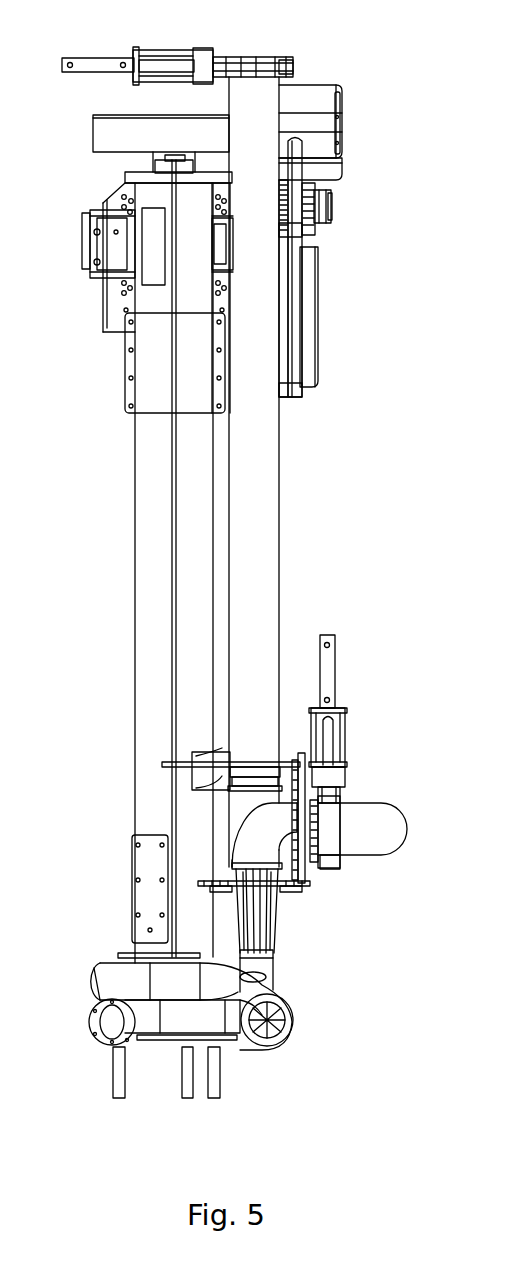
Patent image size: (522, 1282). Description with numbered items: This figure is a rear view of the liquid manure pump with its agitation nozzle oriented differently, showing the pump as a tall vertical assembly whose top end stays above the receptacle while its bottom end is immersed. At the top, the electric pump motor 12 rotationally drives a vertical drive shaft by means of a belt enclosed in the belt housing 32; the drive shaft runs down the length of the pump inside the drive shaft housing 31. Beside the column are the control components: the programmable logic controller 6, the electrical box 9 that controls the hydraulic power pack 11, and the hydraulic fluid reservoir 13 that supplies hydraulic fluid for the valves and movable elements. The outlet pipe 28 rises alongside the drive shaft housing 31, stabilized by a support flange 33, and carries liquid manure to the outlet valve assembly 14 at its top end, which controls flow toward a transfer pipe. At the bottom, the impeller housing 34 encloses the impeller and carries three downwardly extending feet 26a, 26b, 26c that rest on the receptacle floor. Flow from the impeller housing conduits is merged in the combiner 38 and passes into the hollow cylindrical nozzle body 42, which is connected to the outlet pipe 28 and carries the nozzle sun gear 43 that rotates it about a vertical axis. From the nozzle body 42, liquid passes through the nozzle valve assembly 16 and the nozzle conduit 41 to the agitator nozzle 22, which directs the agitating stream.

The outlet valve assembly 14 is at (204, 50).
The programmable logic controller 6 is at (317, 90).
The belt housing 32 is at (120, 118).
The electric pump motor 12 is at (117, 193).
The hydraulic power pack 11 is at (305, 175).
The electrical box 9 is at (336, 201).
The hydraulic fluid reservoir 13 is at (308, 340).
The outlet pipe 28 is at (268, 497).
The drive shaft housing 31 is at (148, 520).
The support flange 33 is at (202, 756).
The nozzle valve assembly 16 is at (337, 778).
The nozzle body 42 is at (245, 806).
The nozzle conduit 41 is at (393, 836).
The combiner 38 is at (228, 921).
The nozzle sun gear 43 is at (302, 886).
The agitator nozzle 22 is at (263, 968).
The impeller housing 34 is at (241, 1040).
The foot 26a is at (119, 1095).
The foot 26b is at (216, 1084).
The foot 26c is at (188, 1095).